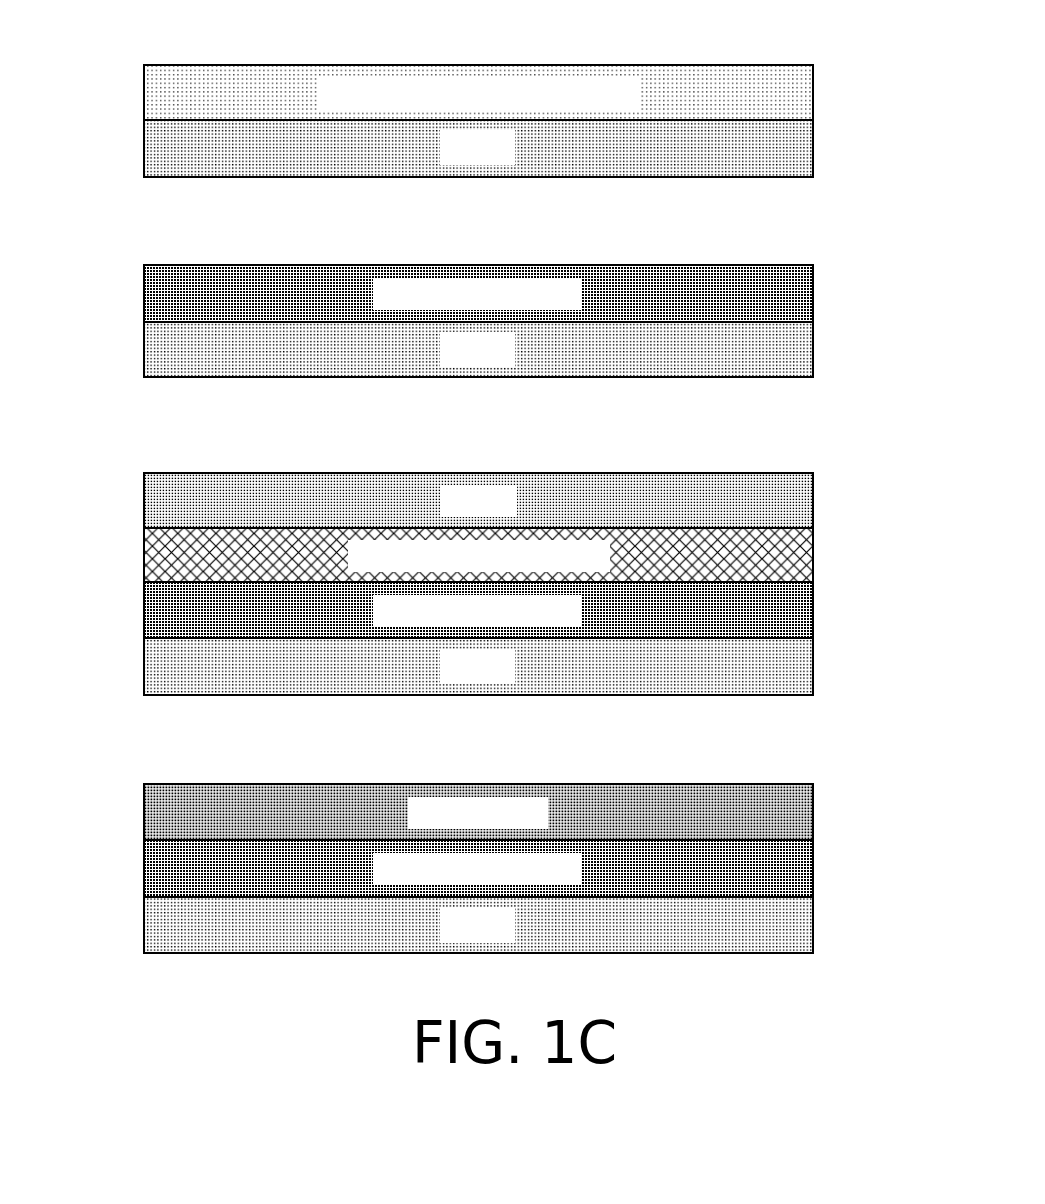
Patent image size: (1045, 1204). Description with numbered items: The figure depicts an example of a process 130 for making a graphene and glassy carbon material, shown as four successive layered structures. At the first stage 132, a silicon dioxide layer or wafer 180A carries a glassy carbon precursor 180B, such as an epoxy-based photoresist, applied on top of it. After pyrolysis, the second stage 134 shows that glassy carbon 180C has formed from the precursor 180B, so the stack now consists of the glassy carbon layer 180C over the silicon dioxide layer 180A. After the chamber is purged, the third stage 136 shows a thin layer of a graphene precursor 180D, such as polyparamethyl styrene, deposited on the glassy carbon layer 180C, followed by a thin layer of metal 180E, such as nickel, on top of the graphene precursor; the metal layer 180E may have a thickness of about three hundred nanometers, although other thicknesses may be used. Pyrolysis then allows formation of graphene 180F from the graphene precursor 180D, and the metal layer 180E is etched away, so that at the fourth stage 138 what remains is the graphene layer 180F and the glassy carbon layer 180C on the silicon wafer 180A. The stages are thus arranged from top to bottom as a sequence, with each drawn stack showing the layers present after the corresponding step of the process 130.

The process 130 is at (503, 31).
The first process stage 132 is at (144, 118).
The second process stage 134 is at (144, 322).
The third process stage 136 is at (144, 579).
The fourth process stage 138 is at (144, 867).
The silicon dioxide layer or wafer 180A is at (813, 148).
The glassy carbon precursor 180B is at (813, 92).
The glassy carbon layer 180C is at (813, 293).
The graphene precursor layer 180D is at (813, 555).
The metal layer 180E is at (813, 500).
The graphene layer 180F is at (813, 812).